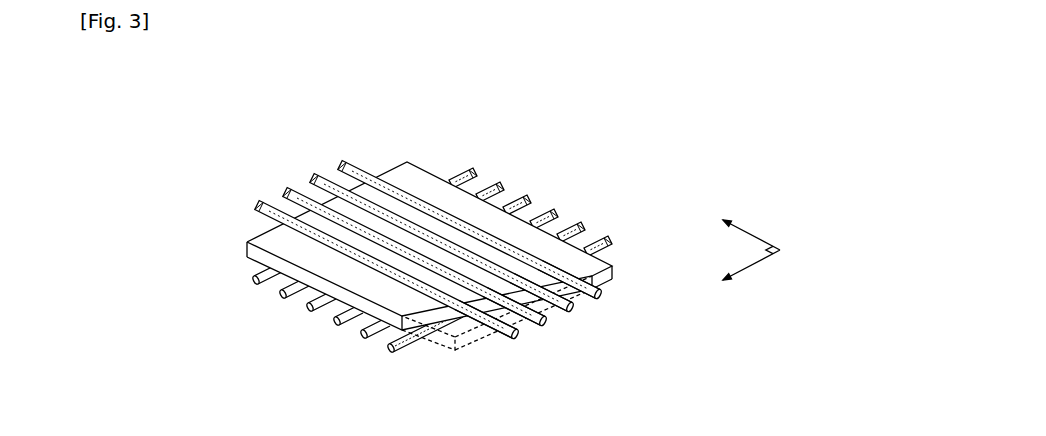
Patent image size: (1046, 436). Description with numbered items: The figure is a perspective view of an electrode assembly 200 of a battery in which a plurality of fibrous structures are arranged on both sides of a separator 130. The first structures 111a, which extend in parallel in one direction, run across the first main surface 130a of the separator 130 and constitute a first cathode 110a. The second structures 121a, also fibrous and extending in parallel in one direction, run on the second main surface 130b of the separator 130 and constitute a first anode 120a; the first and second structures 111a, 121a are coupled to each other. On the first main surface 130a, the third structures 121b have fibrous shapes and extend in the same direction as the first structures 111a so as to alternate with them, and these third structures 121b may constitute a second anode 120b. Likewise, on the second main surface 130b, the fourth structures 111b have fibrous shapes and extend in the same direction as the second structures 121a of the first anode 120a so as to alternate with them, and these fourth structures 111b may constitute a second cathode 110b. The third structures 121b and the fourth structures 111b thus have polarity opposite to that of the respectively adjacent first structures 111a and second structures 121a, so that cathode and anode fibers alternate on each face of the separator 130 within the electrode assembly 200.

The electrode assembly 200 is at (392, 113).
The first cathode 110a is at (193, 162).
The first structures 111a is at (313, 180).
The second cathode 110b is at (697, 181).
The fourth structures 111b is at (502, 186).
The separator 130 is at (141, 228).
The first main surface 130a is at (252, 241).
The second main surface 130b is at (253, 263).
The first anode 120a is at (297, 399).
The second structures 121a is at (475, 172).
The second anode 120b is at (680, 362).
The third structures 121b is at (543, 322).